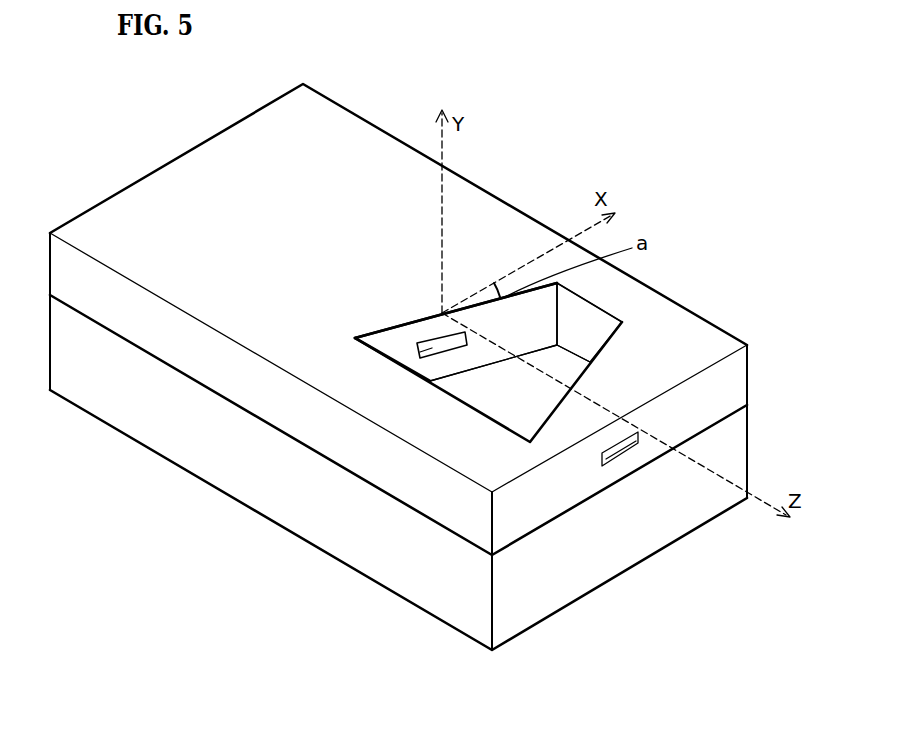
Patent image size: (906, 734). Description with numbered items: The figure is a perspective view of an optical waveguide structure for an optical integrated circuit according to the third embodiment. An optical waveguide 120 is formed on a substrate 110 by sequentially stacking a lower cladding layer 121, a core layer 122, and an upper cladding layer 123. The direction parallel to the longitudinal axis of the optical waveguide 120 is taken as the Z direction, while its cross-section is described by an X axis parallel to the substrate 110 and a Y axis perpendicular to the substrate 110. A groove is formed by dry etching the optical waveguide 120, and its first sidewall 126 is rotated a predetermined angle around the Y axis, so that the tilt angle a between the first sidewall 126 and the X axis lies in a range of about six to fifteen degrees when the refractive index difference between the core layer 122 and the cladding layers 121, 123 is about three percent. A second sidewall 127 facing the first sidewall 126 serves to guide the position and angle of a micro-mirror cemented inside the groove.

The substrate 110 is at (547, 580).
The optical waveguide 120 is at (580, 478).
The lower cladding layer 121 is at (439, 444).
The core layer 122 is at (423, 355).
The upper cladding layer 123 is at (422, 328).
The first sidewall 126 is at (533, 316).
The second sidewall 127 is at (606, 342).